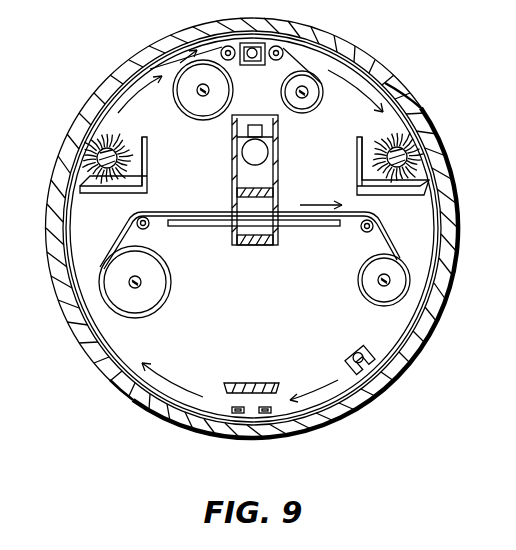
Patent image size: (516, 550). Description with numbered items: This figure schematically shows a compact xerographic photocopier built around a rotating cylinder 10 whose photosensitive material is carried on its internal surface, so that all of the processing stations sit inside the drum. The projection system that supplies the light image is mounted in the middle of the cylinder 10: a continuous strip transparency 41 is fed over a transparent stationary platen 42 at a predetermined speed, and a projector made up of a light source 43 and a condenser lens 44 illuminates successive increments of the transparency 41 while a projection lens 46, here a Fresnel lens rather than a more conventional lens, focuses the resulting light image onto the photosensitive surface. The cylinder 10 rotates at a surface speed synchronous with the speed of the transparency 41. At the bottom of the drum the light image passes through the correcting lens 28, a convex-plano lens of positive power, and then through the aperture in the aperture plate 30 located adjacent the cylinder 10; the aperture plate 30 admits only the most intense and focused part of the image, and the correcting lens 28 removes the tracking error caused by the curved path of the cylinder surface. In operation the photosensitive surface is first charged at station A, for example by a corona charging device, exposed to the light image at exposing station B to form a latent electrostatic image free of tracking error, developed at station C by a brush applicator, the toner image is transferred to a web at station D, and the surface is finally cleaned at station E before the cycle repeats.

The cylinder 10 is at (423, 100).
The correcting lens 28 is at (261, 383).
The aperture plate 30 is at (263, 423).
The continuous strip transparency 41 is at (165, 212).
The transparent stationary platen 42 is at (207, 226).
The light source 43 is at (278, 140).
The condenser lens 44 is at (264, 190).
The projection lens 46 is at (258, 247).
The charging station A is at (346, 349).
The exposing station B is at (220, 409).
The developing station C is at (166, 170).
The transfer station D is at (259, 86).
The cleaning station E is at (350, 170).